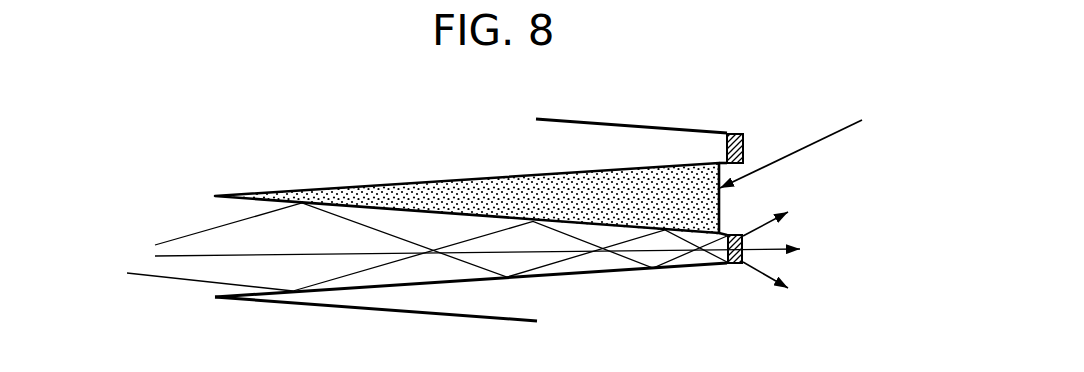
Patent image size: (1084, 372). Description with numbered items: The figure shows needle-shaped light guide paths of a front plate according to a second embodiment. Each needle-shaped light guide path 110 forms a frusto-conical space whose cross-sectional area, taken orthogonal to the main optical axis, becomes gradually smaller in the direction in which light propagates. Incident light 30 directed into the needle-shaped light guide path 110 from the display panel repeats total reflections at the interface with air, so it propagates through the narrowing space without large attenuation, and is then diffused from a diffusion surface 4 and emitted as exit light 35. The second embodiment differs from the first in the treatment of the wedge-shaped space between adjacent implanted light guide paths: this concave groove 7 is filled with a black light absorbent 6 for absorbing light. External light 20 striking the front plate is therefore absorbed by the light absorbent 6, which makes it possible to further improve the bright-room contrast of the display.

The light absorbent 6 is at (471, 178).
The concave groove 7 is at (398, 183).
The needle-shaped light guide path 110 is at (587, 122).
The diffusion surface 4 is at (743, 146).
The external light 20 is at (837, 132).
The incident light 30 is at (203, 283).
The exit light 35 is at (767, 274).